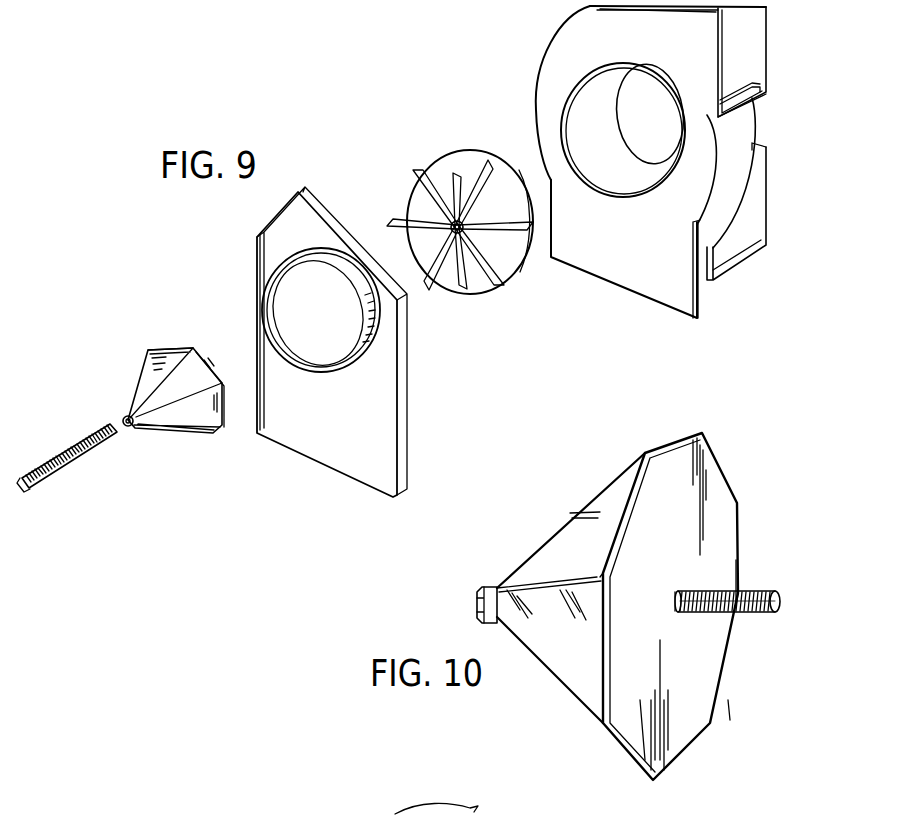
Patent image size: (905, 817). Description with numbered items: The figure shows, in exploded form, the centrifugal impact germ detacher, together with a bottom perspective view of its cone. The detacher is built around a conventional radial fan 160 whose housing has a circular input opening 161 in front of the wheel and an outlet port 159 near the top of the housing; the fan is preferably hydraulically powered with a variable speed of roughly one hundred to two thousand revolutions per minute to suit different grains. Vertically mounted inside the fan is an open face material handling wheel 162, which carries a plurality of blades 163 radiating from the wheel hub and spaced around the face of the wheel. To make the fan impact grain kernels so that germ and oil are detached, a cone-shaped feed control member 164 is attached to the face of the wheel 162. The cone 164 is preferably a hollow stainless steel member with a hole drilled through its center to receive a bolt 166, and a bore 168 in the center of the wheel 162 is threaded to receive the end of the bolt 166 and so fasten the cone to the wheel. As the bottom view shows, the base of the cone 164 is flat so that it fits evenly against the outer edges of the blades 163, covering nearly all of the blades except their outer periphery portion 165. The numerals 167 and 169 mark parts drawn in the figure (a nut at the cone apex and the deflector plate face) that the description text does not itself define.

In FIG. 9, the outlet port 159 is at (747, 47).
In FIG. 9, the radial fan 160 is at (667, 4).
In FIG. 10, the radial fan 160 is at (313, 816).
In FIG. 9, the circular input opening 161 is at (300, 273).
In FIG. 9, the open face material handling wheel 162 is at (471, 231).
In FIG. 9, the blades 163 is at (428, 182).
In FIG. 9, the cone-shaped feed control member 164 is at (156, 388).
In FIG. 10, the cone-shaped feed control member 164 is at (642, 621).
In FIG. 9, the outer periphery portion 165 is at (172, 357).
In FIG. 10, the outer periphery portion 165 is at (566, 654).
In FIG. 9, the bolt 166 is at (46, 460).
In FIG. 10, the bolt 166 is at (745, 614).
In FIG. 9, the nut 167 is at (126, 426).
In FIG. 10, the nut 167 is at (680, 585).
In FIG. 9, the bore 168 is at (458, 235).
In FIG. 10, the deflector plate 169 is at (636, 722).